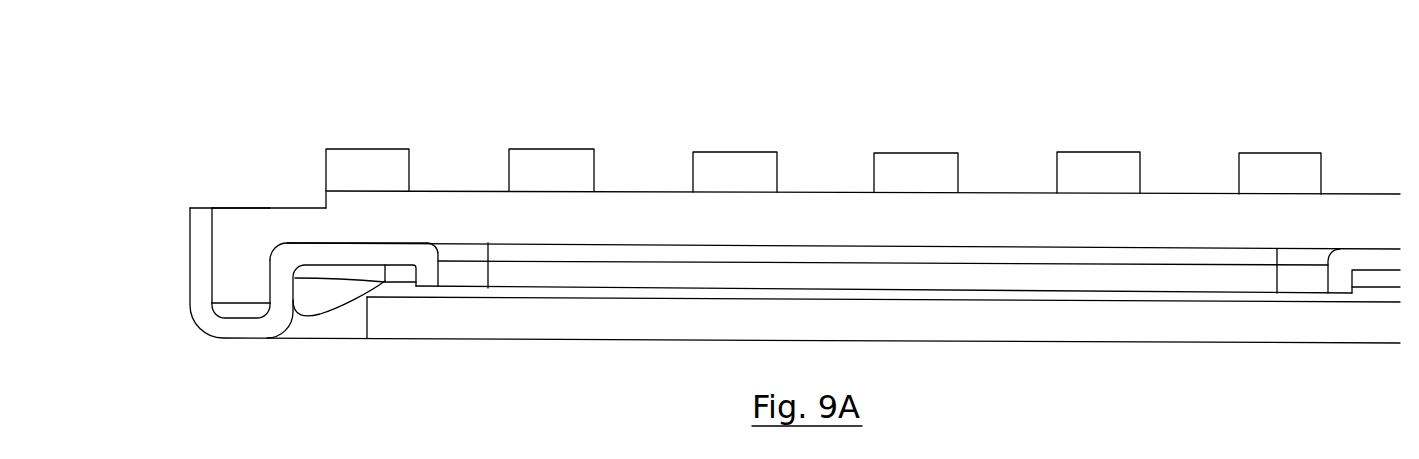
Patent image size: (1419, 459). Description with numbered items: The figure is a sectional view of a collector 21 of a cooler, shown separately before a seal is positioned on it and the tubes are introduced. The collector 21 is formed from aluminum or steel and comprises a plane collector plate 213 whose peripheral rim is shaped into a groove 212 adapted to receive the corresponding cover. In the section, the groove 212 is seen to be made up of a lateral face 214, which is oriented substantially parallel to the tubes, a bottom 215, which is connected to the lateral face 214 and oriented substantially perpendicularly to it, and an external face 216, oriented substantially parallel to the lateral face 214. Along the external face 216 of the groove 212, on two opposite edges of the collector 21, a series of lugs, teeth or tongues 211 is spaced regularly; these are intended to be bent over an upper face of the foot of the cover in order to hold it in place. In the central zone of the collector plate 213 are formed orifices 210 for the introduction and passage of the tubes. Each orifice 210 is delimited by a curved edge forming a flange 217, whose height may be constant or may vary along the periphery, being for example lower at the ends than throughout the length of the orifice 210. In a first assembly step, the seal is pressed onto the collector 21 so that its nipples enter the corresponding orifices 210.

The collector 21 is at (215, 337).
The orifice 210 is at (1005, 280).
The lugs, teeth or tongues 211 is at (390, 155).
The groove 212 is at (228, 293).
The collector plate 213 is at (323, 243).
The lateral face 214 is at (270, 272).
The bottom 215 is at (243, 317).
The external face 216 is at (213, 238).
The flange 217 is at (433, 275).